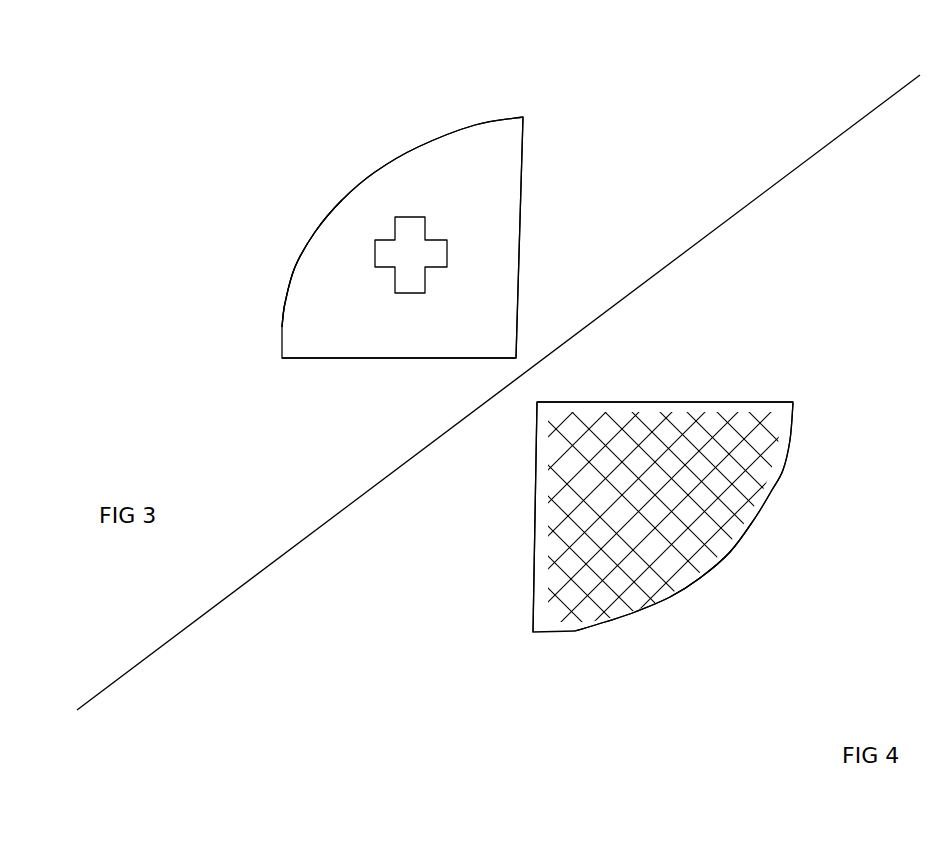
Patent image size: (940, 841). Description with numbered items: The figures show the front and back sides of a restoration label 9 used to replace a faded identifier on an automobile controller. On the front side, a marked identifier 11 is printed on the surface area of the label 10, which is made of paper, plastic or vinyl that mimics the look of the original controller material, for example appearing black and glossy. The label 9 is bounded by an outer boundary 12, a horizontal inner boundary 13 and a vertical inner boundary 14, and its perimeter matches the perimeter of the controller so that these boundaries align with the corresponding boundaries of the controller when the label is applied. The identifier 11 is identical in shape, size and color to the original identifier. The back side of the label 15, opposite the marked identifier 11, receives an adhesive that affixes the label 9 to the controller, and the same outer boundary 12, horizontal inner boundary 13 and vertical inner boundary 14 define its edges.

In FIG. 3, the label 9 is at (445, 163).
In FIG. 4, the label 9 is at (702, 427).
In FIG. 3, the surface area of the label 10 is at (480, 243).
In FIG. 4, the surface area of the label 10 is at (663, 517).
In FIG. 3, the marked identifier 11 is at (393, 250).
In FIG. 3, the outer boundary of the label 12 is at (319, 220).
In FIG. 4, the outer boundary of the label 12 is at (728, 551).
In FIG. 3, the horizontal inner boundary of the label 13 is at (390, 358).
In FIG. 4, the horizontal inner boundary of the label 13 is at (534, 512).
In FIG. 3, the vertical inner boundary of the label 14 is at (523, 152).
In FIG. 4, the vertical inner boundary of the label 14 is at (642, 400).
In FIG. 4, the backside of the label 15 is at (613, 570).